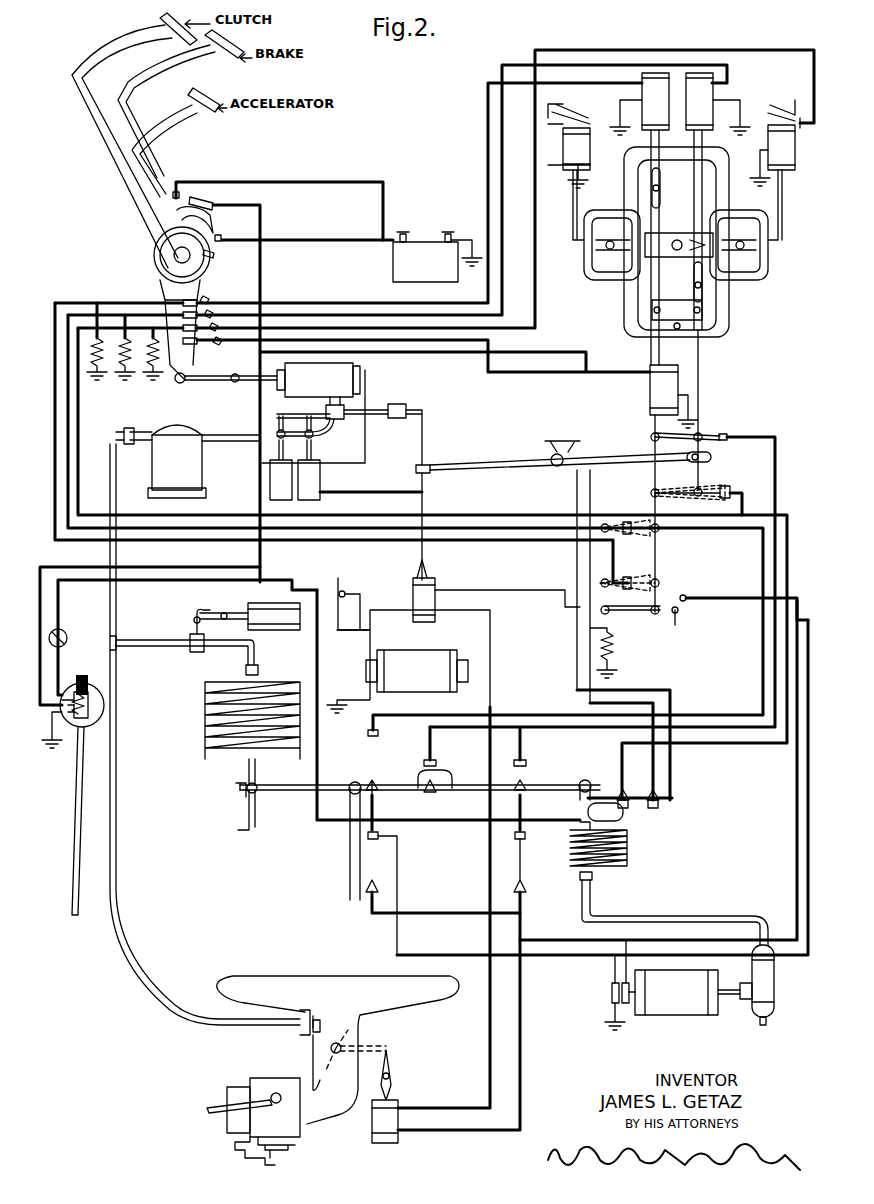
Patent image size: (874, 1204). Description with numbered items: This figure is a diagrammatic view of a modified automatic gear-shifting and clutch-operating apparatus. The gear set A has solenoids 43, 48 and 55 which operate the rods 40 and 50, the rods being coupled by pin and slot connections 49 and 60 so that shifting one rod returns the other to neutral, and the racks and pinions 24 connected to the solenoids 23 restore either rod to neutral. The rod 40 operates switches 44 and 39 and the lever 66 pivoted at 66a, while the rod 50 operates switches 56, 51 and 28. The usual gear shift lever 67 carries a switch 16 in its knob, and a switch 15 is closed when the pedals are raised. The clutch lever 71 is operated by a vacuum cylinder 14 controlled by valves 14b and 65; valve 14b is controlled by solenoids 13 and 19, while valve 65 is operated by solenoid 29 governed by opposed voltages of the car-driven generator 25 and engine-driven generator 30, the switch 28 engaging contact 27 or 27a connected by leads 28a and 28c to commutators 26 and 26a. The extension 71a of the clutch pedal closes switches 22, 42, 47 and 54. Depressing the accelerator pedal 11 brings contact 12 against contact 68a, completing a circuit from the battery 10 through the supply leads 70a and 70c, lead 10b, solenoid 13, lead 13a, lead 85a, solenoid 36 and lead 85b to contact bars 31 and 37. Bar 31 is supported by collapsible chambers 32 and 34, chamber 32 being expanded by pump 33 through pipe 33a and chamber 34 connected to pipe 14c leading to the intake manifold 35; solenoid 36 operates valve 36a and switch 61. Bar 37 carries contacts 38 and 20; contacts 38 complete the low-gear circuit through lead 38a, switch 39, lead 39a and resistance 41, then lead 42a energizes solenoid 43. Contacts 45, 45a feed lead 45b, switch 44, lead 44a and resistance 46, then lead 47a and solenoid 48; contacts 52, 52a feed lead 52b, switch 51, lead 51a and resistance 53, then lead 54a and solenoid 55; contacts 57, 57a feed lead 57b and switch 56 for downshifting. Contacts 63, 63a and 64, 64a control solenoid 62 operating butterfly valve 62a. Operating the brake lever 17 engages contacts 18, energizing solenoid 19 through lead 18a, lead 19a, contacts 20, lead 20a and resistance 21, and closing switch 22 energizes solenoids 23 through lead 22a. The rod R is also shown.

The battery 10 is at (400, 252).
The lead 10b is at (262, 288).
The accelerator pedal 11 is at (145, 178).
The contact 12 is at (212, 200).
The solenoid 13 is at (270, 478).
The lead 13a is at (262, 566).
The vacuum cylinder 14 is at (318, 380).
The valve 14b is at (334, 420).
The pipe 14c is at (118, 810).
The switch 15 is at (66, 634).
The switch 16 is at (82, 675).
The brake lever 17 is at (148, 78).
The contacts 18 is at (222, 240).
The lead 18a is at (367, 380).
The solenoid 19 is at (320, 478).
The lead 19a is at (360, 492).
The contacts 20 is at (674, 798).
The lead 20a is at (612, 690).
The resistance 21 is at (615, 648).
The switch 22 is at (209, 343).
The lead 22a is at (535, 298).
The solenoids 23 is at (572, 150).
The racks and pinions 24 is at (676, 245).
The generator 25 is at (674, 985).
The commutator 26 is at (628, 1004).
The commutator 26a is at (612, 993).
The contact 27 is at (660, 628).
The contact 27a is at (688, 603).
The switch 28 is at (670, 612).
The lead 28a is at (797, 800).
The lead 28c is at (808, 828).
The solenoid 29 is at (436, 600).
The generator 30 is at (408, 661).
The contact bar 31 is at (352, 782).
The collapsible chamber 32 is at (628, 850).
The pump 33 is at (770, 990).
The pipe 33a is at (592, 895).
The collapsible chamber 34 is at (215, 740).
The intake manifold 35 is at (333, 1070).
The solenoid 36 is at (285, 610).
The valve 36a is at (194, 652).
The contact bar 37 is at (592, 798).
The contacts 38 is at (634, 808).
The lead 38a is at (725, 743).
The switch 39 is at (728, 482).
The lead 39a is at (455, 515).
The rod 40 is at (704, 350).
The resistance 41 is at (97, 351).
The switch 42 is at (178, 303).
The lead 42a is at (502, 315).
The solenoid 43 is at (713, 108).
The switch 44 is at (715, 433).
The lead 44a is at (318, 527).
The contact 45 is at (526, 780).
The fixed contact 45a is at (528, 762).
The lead 45b is at (695, 743).
The resistance 46 is at (125, 357).
The switch 47 is at (175, 292).
The lead 47a is at (493, 374).
The solenoid 48 is at (650, 395).
The pin and slot connection 49 is at (668, 188).
The rod 50 is at (651, 356).
The switch 51 is at (670, 590).
The lead 51a is at (465, 540).
The contact 52 is at (376, 782).
The fixed contact 52a is at (378, 733).
The lead 52b is at (507, 715).
The resistance 53 is at (154, 363).
The switch 54 is at (208, 296).
The lead 54a is at (488, 170).
The solenoid 55 is at (642, 108).
The switch 56 is at (650, 538).
The contact 57 is at (438, 780).
The fixed contact 57a is at (436, 762).
The lead 57b is at (775, 560).
The pin and slot connection 60 is at (670, 318).
The switch 61 is at (337, 594).
The solenoid 62 is at (392, 1110).
The butterfly valve 62a is at (350, 1045).
The contact 63 is at (528, 890).
The contact 63a is at (522, 860).
The contact 64 is at (443, 889).
The contact 64a is at (374, 840).
The valve 65 is at (398, 404).
The lever 66 is at (505, 460).
The pivot 66a is at (552, 463).
The gear shift lever 67 is at (677, 240).
The contact 68a is at (180, 190).
The conductor 70a is at (305, 182).
The conductor 70c is at (296, 240).
The clutch lever 71 is at (105, 135).
The extension 71a is at (190, 382).
The lead 85a is at (145, 581).
The lead 85b is at (317, 662).
The gear set A is at (730, 310).
The rod R is at (713, 391).